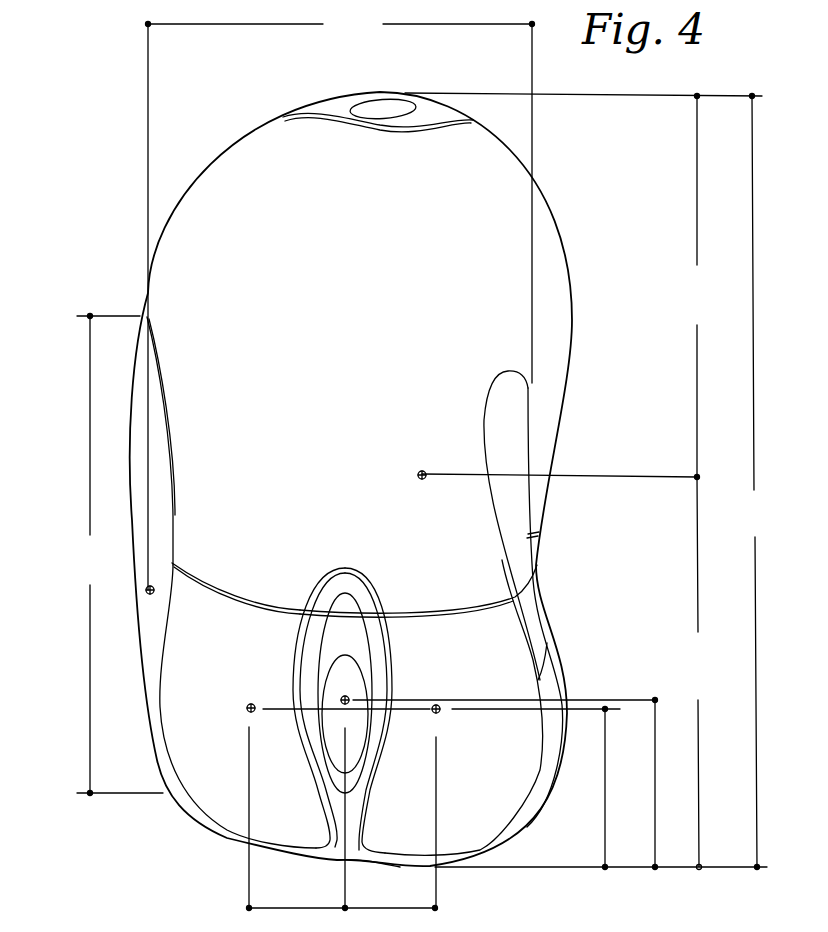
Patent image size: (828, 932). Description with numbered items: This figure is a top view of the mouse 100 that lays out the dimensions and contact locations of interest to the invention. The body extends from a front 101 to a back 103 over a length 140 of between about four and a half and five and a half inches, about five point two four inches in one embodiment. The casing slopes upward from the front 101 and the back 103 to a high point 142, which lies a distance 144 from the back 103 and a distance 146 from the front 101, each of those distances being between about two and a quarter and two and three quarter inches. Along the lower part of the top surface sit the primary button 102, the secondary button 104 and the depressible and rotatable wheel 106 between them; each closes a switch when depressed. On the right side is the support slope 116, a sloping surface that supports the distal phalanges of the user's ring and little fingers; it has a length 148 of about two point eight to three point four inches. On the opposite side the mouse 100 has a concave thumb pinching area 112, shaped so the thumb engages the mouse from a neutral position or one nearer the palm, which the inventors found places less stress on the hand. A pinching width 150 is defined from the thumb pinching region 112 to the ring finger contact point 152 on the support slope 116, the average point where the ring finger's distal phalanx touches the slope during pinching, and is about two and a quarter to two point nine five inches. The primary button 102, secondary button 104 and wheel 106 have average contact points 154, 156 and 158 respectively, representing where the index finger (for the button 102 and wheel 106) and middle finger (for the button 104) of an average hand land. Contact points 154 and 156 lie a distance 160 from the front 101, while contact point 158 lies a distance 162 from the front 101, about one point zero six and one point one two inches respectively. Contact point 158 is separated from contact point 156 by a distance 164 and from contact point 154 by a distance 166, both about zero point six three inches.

The mouse 100 is at (143, 285).
The front 101 is at (388, 866).
The primary button 102 is at (478, 822).
The back 103 is at (395, 95).
The secondary button 104 is at (213, 795).
The depressible and rotatable wheel 106 is at (350, 668).
The thumb pinching area 112 is at (538, 537).
The support slope 116 is at (140, 468).
The length 140 is at (751, 482).
The high point 142 is at (425, 469).
The distance 144 is at (583, 286).
The distance 146 is at (601, 673).
The length 148 is at (115, 555).
The pinching width 150 is at (340, 300).
The ring finger contact point 152 is at (144, 595).
The average contact point 154 is at (436, 715).
The average contact point 156 is at (248, 703).
The average contact point 158 is at (342, 699).
The distance 160 is at (611, 788).
The distance 162 is at (654, 784).
The distance 164 is at (297, 824).
The distance 166 is at (391, 830).